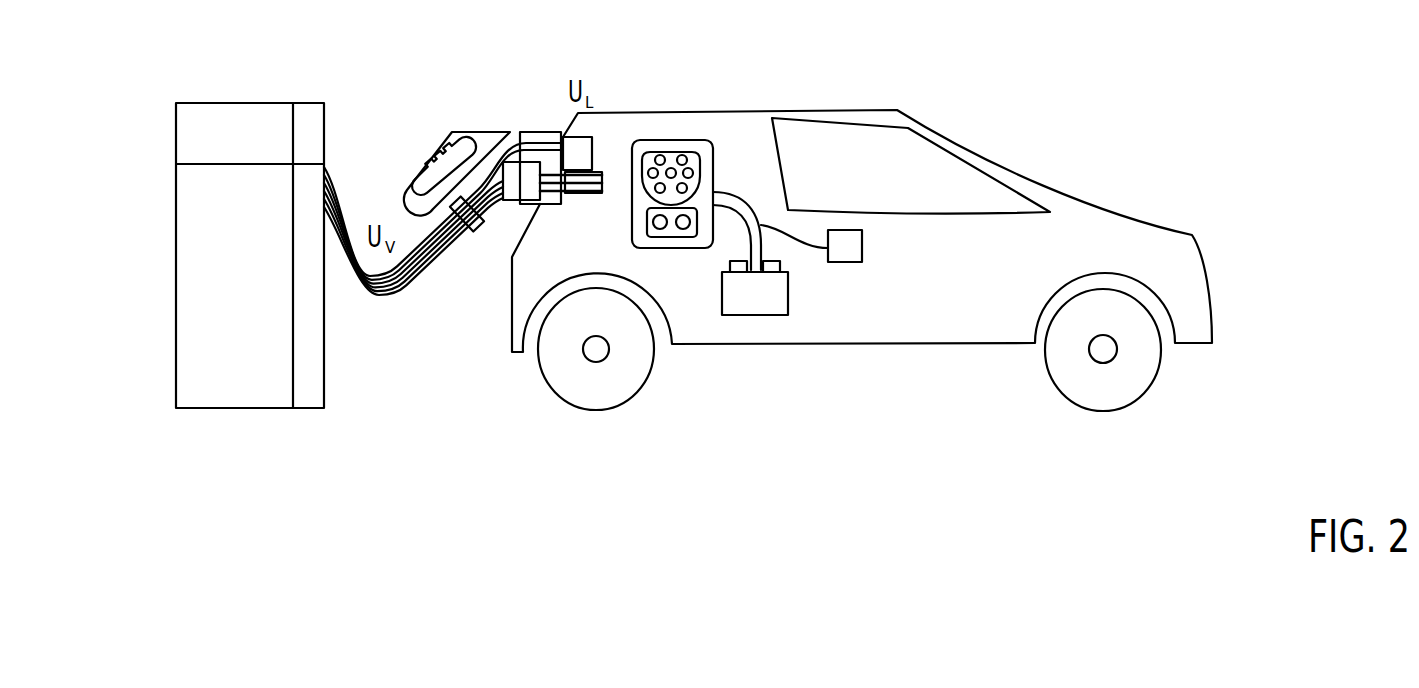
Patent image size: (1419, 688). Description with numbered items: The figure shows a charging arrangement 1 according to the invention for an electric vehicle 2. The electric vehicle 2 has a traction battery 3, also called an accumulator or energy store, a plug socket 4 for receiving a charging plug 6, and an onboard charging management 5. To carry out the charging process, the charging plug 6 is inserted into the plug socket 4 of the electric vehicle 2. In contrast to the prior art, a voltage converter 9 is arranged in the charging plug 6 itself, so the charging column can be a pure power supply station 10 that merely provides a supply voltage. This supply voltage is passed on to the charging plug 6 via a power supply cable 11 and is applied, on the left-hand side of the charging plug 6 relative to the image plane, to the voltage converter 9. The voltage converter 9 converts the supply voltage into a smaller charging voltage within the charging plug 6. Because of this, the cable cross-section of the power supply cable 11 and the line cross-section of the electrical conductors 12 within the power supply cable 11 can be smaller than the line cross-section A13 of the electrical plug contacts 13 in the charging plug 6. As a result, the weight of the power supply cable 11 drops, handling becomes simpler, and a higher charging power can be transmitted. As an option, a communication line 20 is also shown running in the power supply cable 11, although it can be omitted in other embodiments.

The charging arrangement 1 is at (1120, 44).
The electric vehicle 2 is at (898, 118).
The traction battery 3 is at (762, 297).
The plug socket 4 is at (702, 155).
The onboard charging management 5 is at (843, 250).
The charging plug 6 is at (537, 118).
The voltage converter 9 is at (522, 182).
The power supply station 10 is at (190, 343).
The power supply cable 11 is at (435, 253).
The electrical conductors 12 is at (376, 291).
The electrical plug contacts 13 is at (608, 165).
The line cross-section of the electrical plug contacts A13 is at (598, 163).
The communication line 20 is at (417, 252).